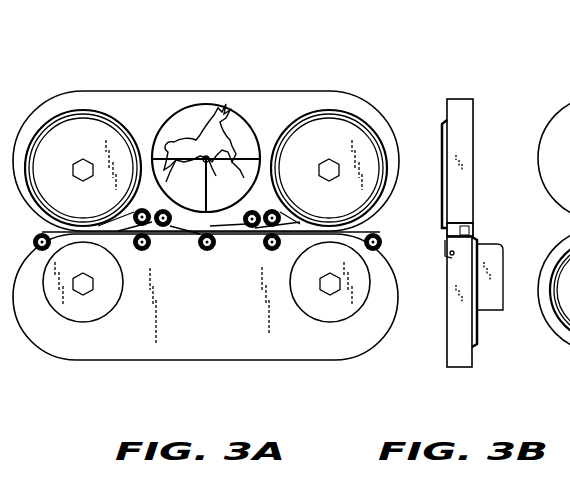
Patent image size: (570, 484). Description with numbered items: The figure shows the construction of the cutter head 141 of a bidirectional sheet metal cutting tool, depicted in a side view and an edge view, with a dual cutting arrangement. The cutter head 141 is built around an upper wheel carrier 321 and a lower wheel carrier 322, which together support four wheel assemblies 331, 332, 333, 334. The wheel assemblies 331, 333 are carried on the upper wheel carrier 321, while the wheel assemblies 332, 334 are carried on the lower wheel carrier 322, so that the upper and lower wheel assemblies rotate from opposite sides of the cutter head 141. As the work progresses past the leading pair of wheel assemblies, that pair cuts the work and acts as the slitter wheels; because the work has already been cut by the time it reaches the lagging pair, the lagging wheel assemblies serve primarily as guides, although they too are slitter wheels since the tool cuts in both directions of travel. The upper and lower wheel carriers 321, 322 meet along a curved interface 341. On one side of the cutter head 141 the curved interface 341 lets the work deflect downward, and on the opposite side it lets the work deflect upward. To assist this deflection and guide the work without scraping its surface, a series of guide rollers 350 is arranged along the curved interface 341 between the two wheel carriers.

In FIG. 3A, the cutter head 141 is at (392, 60).
In FIG. 3B, the cutter head 141 is at (487, 60).
In FIG. 3A, the upper wheel carrier 321 is at (253, 94).
In FIG. 3A, the lower wheel carrier 322 is at (203, 362).
In FIG. 3A, the wheel assembly 331 is at (70, 128).
In FIG. 3A, the wheel assembly 332 is at (88, 318).
In FIG. 3A, the wheel assembly 333 is at (325, 130).
In FIG. 3A, the wheel assembly 334 is at (310, 320).
In FIG. 3B, the wheel assembly 334 is at (569, 350).
In FIG. 3A, the curved interface 341 is at (183, 237).
In FIG. 3A, the guide rollers 350 is at (158, 207).